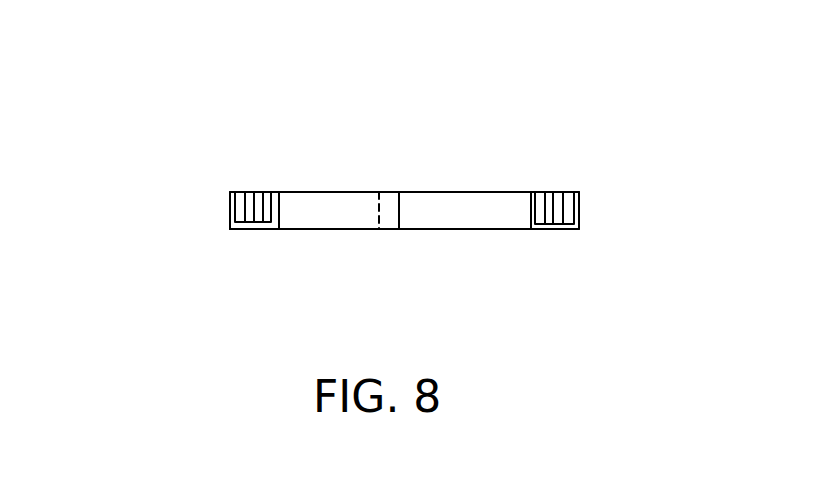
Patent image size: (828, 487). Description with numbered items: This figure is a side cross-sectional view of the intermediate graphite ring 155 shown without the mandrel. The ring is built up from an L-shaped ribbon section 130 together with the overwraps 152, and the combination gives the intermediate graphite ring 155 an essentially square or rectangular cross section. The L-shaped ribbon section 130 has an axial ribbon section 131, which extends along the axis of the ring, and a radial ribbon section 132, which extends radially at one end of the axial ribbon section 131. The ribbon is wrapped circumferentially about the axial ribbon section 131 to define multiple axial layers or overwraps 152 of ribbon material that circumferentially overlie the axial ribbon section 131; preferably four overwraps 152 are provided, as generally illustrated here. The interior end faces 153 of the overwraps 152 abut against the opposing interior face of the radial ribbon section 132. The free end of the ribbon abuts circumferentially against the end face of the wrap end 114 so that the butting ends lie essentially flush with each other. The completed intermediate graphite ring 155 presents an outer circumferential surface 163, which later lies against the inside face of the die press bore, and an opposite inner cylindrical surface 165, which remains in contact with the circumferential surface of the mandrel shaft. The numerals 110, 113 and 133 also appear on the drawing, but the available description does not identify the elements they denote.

The filter assembly 110 is at (545, 231).
The partition line 113 is at (389, 193).
The wrap end 114 is at (390, 224).
The L-shaped ribbon section 130 is at (458, 231).
The axial ribbon section 131 is at (279, 207).
The radial ribbon section 132 is at (250, 230).
The side wall 133 is at (337, 192).
The overwraps 152 is at (542, 192).
The interior end faces 153 is at (582, 217).
The intermediate graphite ring 155 is at (261, 192).
The outer circumferential surface 163 is at (229, 208).
The inner cylindrical surface 165 is at (498, 230).